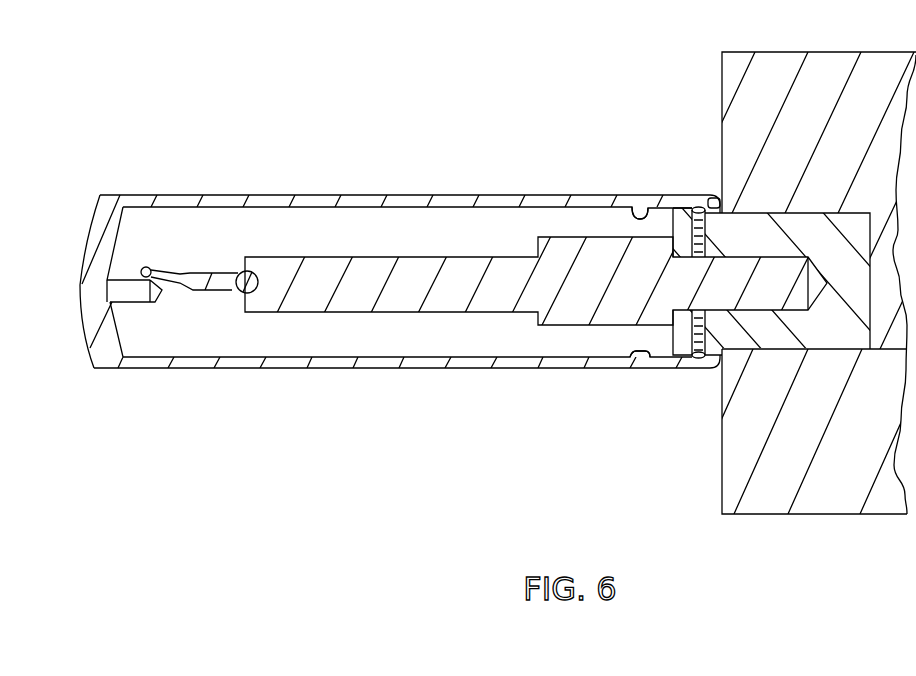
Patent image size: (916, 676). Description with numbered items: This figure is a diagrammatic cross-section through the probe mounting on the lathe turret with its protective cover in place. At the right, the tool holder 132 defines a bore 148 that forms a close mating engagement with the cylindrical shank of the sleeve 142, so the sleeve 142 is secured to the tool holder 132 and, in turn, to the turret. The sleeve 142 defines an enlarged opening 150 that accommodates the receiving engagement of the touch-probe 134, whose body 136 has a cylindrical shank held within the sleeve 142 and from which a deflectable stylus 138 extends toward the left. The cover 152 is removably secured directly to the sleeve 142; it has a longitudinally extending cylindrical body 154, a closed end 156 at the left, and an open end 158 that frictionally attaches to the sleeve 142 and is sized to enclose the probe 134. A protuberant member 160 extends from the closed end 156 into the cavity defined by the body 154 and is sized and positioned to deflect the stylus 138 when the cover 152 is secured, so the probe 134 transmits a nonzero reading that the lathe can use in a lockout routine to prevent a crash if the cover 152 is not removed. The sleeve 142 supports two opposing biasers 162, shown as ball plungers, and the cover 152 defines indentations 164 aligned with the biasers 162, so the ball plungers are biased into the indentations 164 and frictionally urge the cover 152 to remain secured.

The tool holder 132 is at (790, 58).
The touch-probe 134 is at (469, 332).
The body 136 is at (417, 258).
The stylus 138 is at (200, 271).
The sleeve 142 is at (785, 346).
The bore 148 is at (807, 226).
The enlarged opening 150 is at (645, 217).
The cover 152 is at (247, 235).
The cylindrical body 154 is at (307, 197).
The closed end 156 is at (88, 236).
The open end 158 is at (722, 202).
The protuberant member 160 is at (133, 292).
The biaser 162 is at (690, 230).
The indentation 164 is at (698, 206).